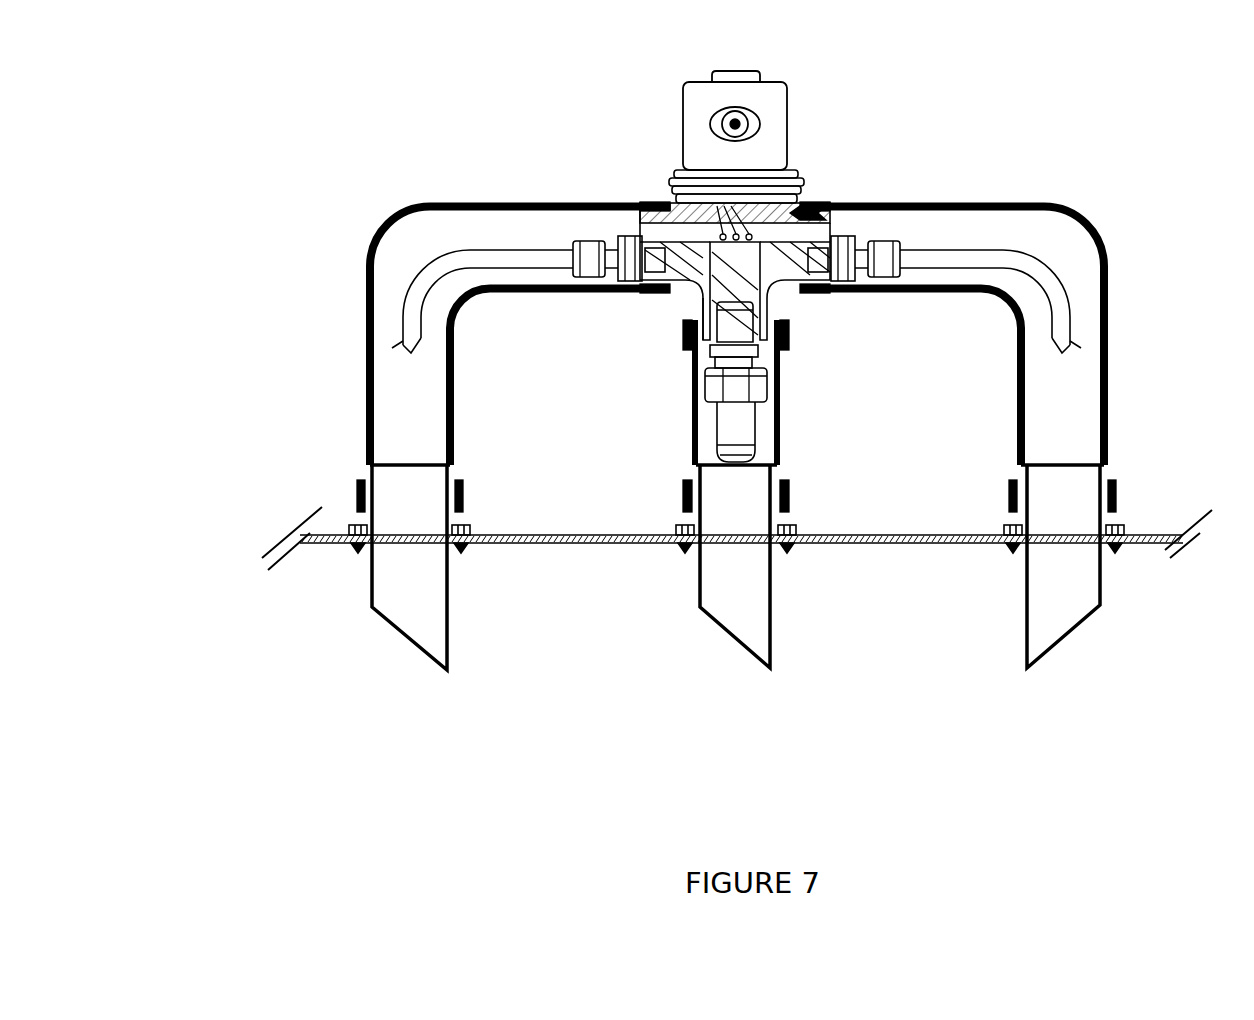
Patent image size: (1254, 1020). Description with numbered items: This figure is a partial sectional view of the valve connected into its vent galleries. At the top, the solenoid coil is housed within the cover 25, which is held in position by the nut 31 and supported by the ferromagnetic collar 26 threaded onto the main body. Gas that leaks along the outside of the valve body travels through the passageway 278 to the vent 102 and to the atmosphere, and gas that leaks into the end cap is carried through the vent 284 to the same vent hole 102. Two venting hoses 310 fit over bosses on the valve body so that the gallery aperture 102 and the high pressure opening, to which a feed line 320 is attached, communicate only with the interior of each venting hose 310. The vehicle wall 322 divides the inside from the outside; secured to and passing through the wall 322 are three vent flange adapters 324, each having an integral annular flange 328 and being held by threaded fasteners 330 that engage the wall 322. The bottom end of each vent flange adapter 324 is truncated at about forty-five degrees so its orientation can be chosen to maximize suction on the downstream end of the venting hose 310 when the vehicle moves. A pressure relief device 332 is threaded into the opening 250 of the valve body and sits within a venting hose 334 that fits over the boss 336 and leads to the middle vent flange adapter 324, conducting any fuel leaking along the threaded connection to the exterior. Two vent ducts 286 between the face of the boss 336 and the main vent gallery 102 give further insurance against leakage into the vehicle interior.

The cover 25 is at (697, 125).
The collar 26 is at (790, 170).
The nut 31 is at (745, 72).
The vent 102 is at (790, 230).
The opening 250 is at (760, 340).
The passageway 278 is at (672, 182).
The vent 284 is at (630, 205).
The vent duct 286 is at (698, 298).
The venting hose 310 is at (366, 386).
The feed line 320 is at (1040, 272).
The wall 322 is at (868, 533).
The vent flange adapter 324 is at (448, 607).
The annular flange 328 is at (690, 548).
The threaded fastener 330 is at (836, 492).
The pressure relief device 332 is at (705, 387).
The venting hose 334 is at (781, 427).
The boss 336 is at (776, 306).